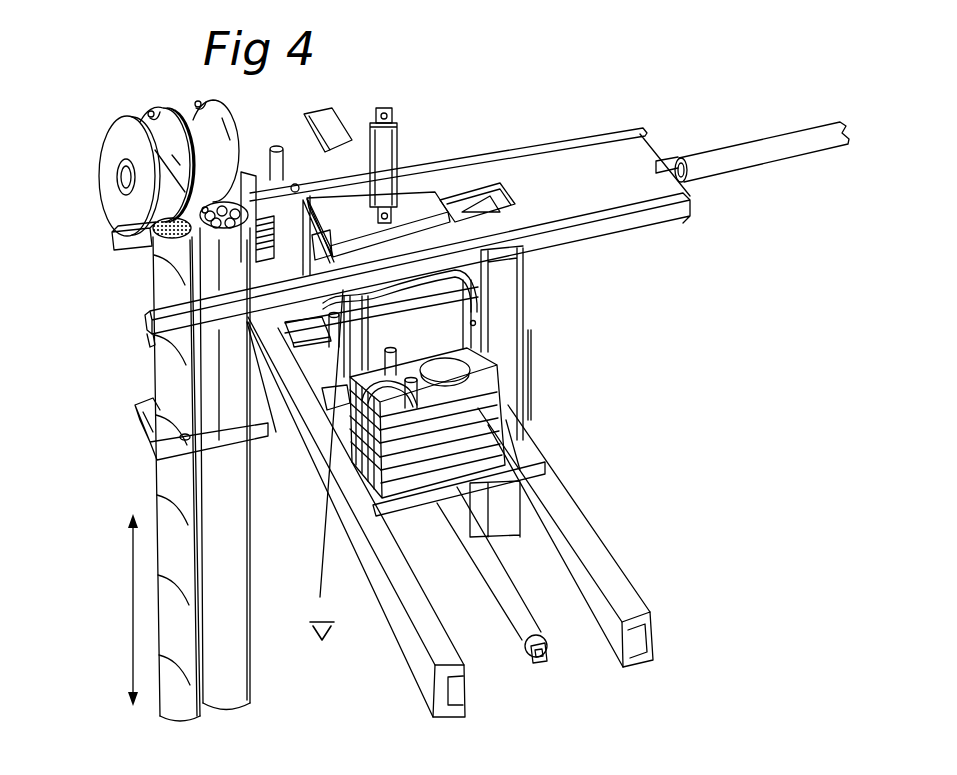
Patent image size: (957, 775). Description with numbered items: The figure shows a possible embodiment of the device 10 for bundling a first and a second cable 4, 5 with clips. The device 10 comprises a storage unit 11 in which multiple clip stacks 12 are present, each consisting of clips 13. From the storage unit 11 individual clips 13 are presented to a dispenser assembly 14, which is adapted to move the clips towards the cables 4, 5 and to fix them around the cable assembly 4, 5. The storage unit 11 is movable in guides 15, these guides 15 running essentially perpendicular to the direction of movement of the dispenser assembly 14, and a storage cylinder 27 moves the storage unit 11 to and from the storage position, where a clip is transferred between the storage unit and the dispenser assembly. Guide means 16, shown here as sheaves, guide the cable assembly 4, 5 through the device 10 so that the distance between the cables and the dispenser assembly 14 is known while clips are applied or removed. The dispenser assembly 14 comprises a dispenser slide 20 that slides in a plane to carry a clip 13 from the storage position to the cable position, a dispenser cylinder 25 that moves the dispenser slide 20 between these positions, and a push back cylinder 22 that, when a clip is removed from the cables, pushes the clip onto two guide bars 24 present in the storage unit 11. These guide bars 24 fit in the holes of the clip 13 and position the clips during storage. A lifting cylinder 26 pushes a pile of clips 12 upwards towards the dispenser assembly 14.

The cable 4 is at (180, 703).
The cable 5 is at (231, 683).
The device 10 is at (94, 180).
The storage unit 11 is at (467, 485).
The clip stack 12 is at (518, 440).
The clip 13 is at (508, 383).
The dispenser assembly 14 is at (537, 133).
The guides 15 is at (640, 660).
The guide means 16 is at (113, 130).
The dispenser slide 20 is at (633, 167).
The push back cylinder 22 is at (380, 163).
The guide bars 24 is at (342, 492).
The dispenser cylinder 25 is at (763, 148).
The lifting cylinder 26 is at (505, 298).
The storage cylinder 27 is at (517, 620).